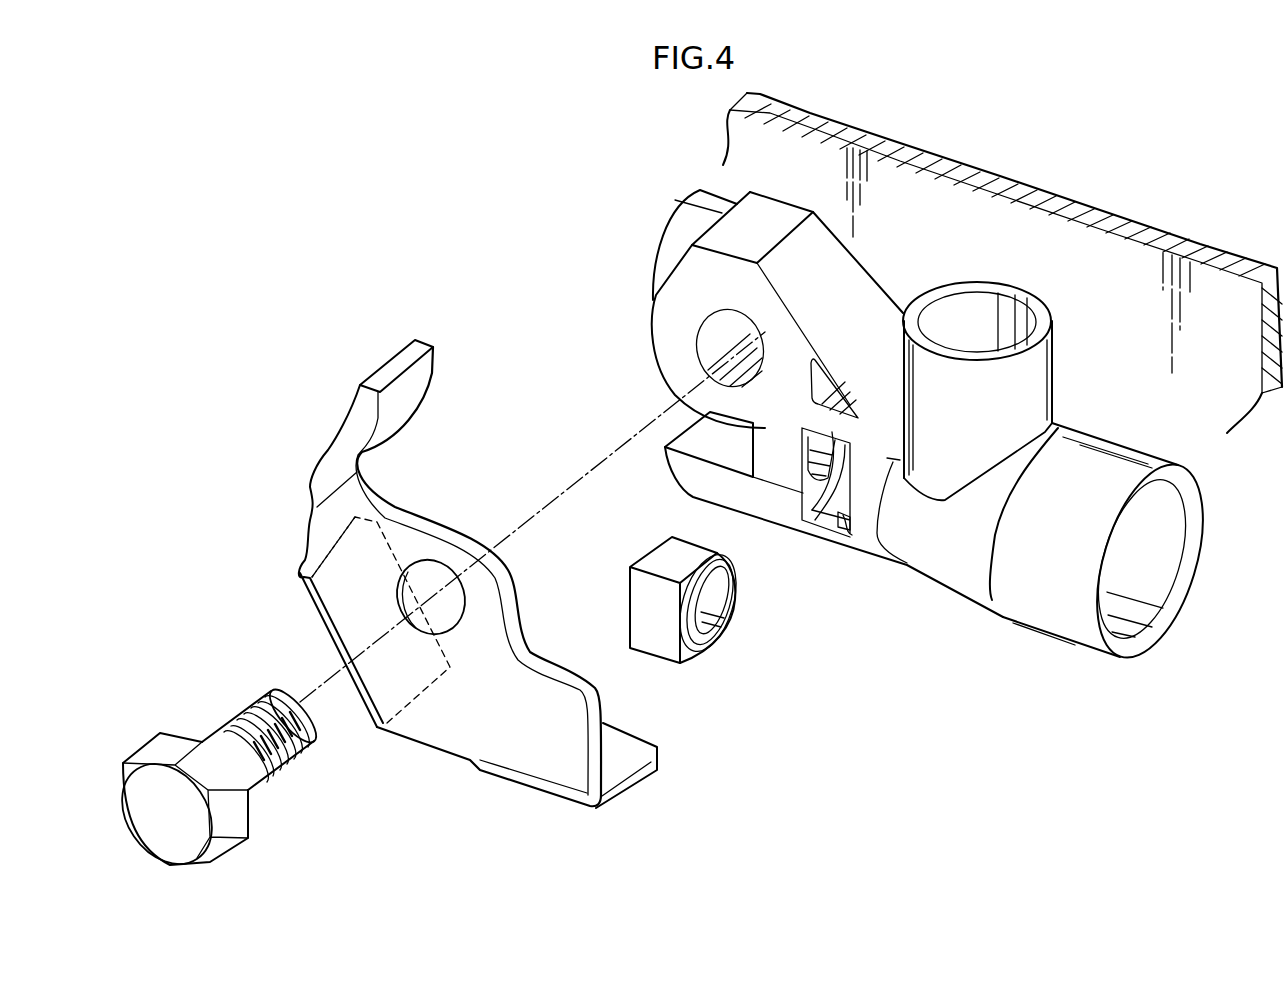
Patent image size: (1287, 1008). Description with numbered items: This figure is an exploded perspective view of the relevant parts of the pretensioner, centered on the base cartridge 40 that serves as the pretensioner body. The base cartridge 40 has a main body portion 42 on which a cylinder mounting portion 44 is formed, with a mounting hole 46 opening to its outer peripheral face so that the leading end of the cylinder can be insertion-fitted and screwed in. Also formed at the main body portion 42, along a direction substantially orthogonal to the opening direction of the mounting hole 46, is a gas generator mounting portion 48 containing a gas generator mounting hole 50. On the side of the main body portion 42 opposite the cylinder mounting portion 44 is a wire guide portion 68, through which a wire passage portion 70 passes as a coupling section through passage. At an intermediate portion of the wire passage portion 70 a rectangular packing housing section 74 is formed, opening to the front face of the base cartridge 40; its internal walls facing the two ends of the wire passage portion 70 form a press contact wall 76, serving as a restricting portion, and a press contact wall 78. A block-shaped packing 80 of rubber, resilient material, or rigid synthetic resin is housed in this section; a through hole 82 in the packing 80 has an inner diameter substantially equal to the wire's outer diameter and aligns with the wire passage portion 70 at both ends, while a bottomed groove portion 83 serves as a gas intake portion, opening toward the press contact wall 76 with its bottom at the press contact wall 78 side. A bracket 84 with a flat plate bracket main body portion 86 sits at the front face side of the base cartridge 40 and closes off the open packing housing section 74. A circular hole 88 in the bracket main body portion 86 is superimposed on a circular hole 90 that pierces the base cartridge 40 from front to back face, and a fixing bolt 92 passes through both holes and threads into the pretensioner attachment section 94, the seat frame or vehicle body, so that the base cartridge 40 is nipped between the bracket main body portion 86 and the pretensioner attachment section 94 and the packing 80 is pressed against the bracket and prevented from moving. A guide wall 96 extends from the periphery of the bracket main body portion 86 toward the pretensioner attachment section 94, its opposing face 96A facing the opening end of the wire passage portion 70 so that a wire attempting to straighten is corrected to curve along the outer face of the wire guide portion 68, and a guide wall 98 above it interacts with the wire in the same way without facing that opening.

The base cartridge 40 is at (893, 255).
The main body portion 42 is at (908, 550).
The cylinder mounting portion 44 is at (1140, 462).
The mounting hole 46 is at (1180, 505).
The gas generator mounting portion 48 is at (1057, 330).
The gas generator mounting hole 50 is at (1005, 310).
The wire guide portion 68 is at (778, 512).
The wire passage portion 70 is at (815, 518).
The packing housing section 74 is at (840, 522).
The press contact wall 76 is at (852, 522).
The press contact wall 78 is at (806, 490).
The packing 80 is at (652, 650).
The through hole 82 is at (716, 632).
The groove portion 83 is at (705, 650).
The bracket 84 is at (647, 785).
The bracket main body portion 86 is at (540, 770).
The circular hole 88 is at (445, 634).
The circular hole 90 is at (678, 372).
The fixing bolt 92 is at (160, 830).
The pretensioner attachment section 94 is at (1020, 215).
The guide wall 96 is at (300, 572).
The opposing face 96A is at (383, 548).
The guide wall 98 is at (383, 375).